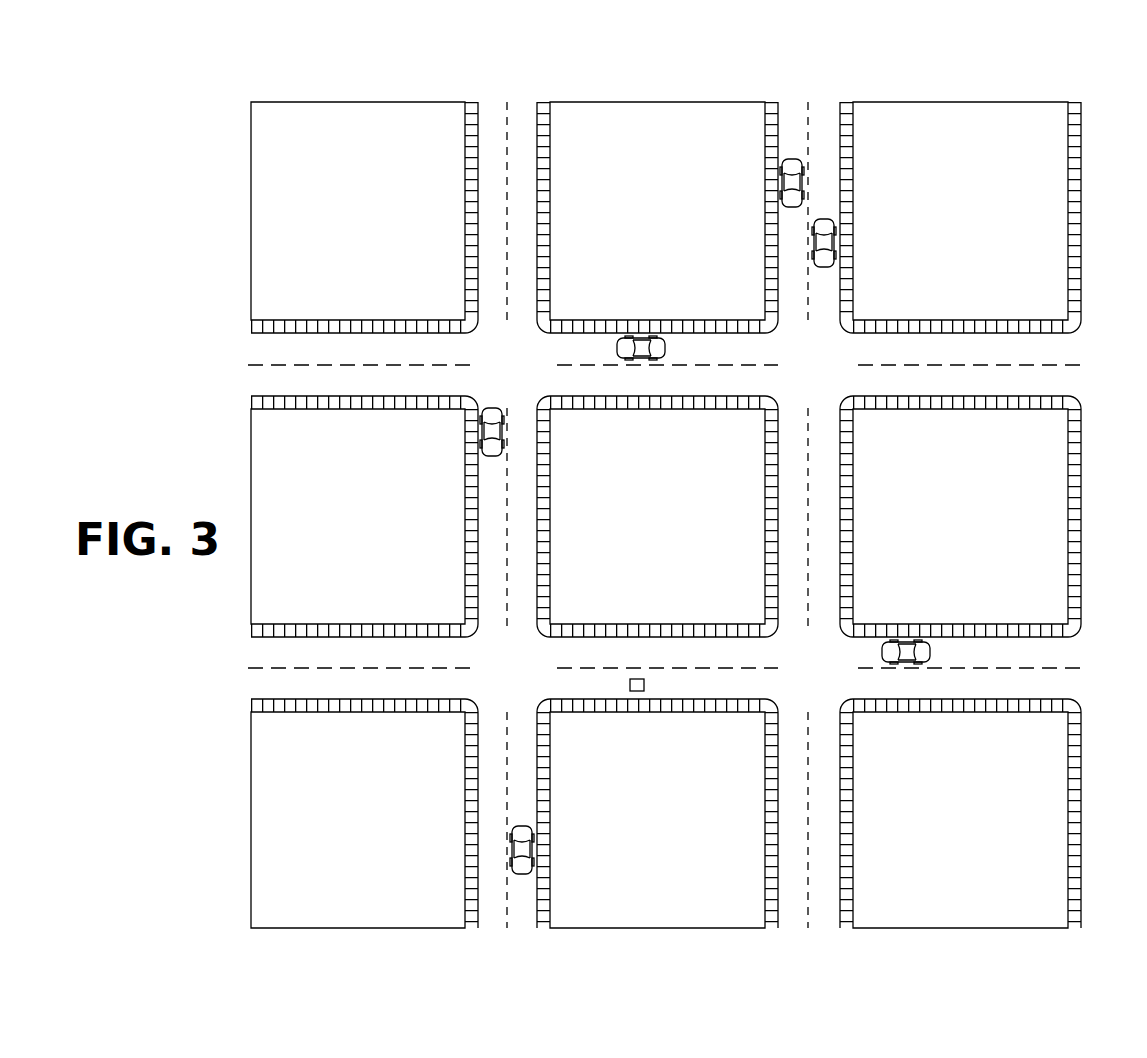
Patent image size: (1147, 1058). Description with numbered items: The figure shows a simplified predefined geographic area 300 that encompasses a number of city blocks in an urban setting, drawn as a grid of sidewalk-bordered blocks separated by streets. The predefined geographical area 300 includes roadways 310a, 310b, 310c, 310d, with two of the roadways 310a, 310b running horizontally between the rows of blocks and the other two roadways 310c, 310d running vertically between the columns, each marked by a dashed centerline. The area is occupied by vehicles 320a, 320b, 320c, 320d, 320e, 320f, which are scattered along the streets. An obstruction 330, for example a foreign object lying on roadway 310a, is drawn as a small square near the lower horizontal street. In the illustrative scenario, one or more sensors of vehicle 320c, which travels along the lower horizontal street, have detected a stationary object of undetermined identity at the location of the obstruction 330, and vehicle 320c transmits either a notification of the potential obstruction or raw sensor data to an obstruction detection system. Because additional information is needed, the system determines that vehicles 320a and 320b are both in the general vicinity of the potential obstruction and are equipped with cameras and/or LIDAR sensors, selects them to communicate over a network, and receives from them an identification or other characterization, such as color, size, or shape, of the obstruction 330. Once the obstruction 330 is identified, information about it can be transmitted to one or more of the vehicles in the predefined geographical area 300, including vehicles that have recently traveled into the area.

The predefined geographic area 300 is at (1030, 70).
The roadway 310a is at (258, 678).
The roadway 310b is at (257, 381).
The roadway 310c is at (493, 108).
The roadway 310d is at (793, 108).
The vehicle 320a is at (490, 458).
The vehicle 320b is at (524, 875).
The vehicle 320c is at (932, 648).
The vehicle 320d is at (668, 344).
The vehicle 320e is at (828, 268).
The vehicle 320f is at (788, 161).
The obstruction 330 is at (645, 683).